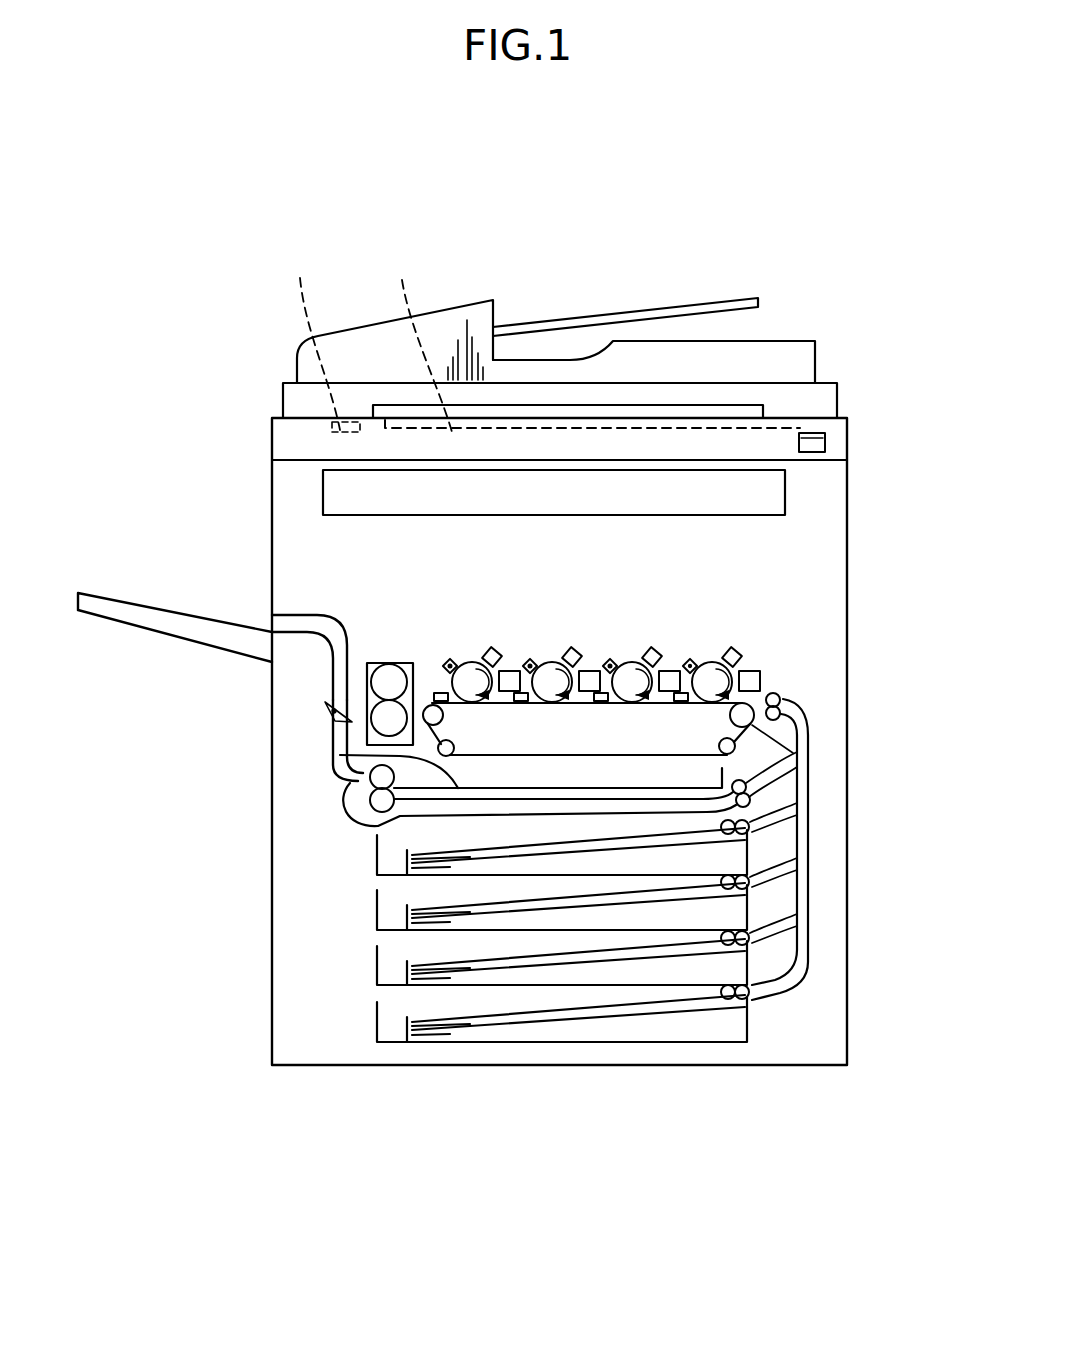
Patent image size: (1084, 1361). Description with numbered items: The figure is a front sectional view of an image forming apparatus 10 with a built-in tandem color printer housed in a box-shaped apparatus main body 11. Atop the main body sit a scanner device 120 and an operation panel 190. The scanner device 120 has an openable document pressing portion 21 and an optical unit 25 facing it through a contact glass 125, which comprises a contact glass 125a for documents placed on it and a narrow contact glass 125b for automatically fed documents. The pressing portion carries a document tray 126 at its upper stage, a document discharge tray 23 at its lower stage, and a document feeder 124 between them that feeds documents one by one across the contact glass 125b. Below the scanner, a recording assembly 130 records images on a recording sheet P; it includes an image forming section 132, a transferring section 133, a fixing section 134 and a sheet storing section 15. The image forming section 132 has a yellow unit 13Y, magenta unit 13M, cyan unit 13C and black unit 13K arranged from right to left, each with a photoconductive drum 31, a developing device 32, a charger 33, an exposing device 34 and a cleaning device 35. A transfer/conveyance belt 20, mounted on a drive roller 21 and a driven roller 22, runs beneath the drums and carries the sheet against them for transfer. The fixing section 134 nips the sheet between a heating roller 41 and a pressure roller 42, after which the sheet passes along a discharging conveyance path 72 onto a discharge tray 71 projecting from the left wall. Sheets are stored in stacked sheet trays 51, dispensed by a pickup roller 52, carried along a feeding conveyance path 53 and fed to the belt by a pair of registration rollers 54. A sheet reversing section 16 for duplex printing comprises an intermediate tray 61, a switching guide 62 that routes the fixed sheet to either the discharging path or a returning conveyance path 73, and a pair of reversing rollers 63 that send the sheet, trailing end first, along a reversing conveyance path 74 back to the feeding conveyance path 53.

The image forming apparatus 10 is at (795, 206).
The apparatus main body 11 is at (848, 482).
The black unit 13K is at (471, 647).
The cyan unit 13C is at (551, 647).
The magenta unit 13M is at (631, 647).
The yellow unit 13Y is at (787, 654).
The sheet storing section 15 is at (172, 898).
The sheet reversing section 16 is at (326, 830).
The transfer/conveyance belt 20 is at (560, 757).
The document pressing portion / drive roller 21 is at (622, 306).
The driven roller 22 is at (754, 726).
The document discharge tray 23 is at (762, 338).
The optical unit 25 is at (632, 485).
The photoconductive drum 31 is at (728, 668).
The developing device 32 is at (761, 681).
The charger 33 is at (687, 660).
The exposing device 34 is at (730, 657).
The cleaning device 35 is at (686, 702).
The heating roller 41 is at (388, 682).
The pressure roller 42 is at (388, 720).
The sheet tray 51 is at (373, 858).
The pickup roller 52 is at (752, 988).
The feeding conveyance path 53 is at (805, 789).
The pair of registration rollers 54 is at (783, 716).
The intermediate tray 61 is at (340, 755).
The switching guide 62 is at (330, 711).
The pair of reversing rollers 63 is at (362, 781).
The discharge tray 71 is at (162, 638).
The discharging conveyance path 72 is at (323, 650).
The returning conveyance path 73 is at (337, 736).
The reversing conveyance path 74 is at (530, 798).
The scanner device 120 is at (735, 192).
The document feeder 124 is at (457, 300).
The contact glass 125 is at (435, 235).
The contact glass 125a is at (415, 339).
The contact glass 125b is at (326, 338).
The document tray 126 is at (548, 323).
The recording assembly 130 is at (777, 565).
The image forming section 132 is at (738, 576).
The transferring section 133 is at (674, 744).
The fixing section 134 is at (273, 620).
The operation panel 190 is at (737, 407).
The recording sheet P is at (586, 1030).